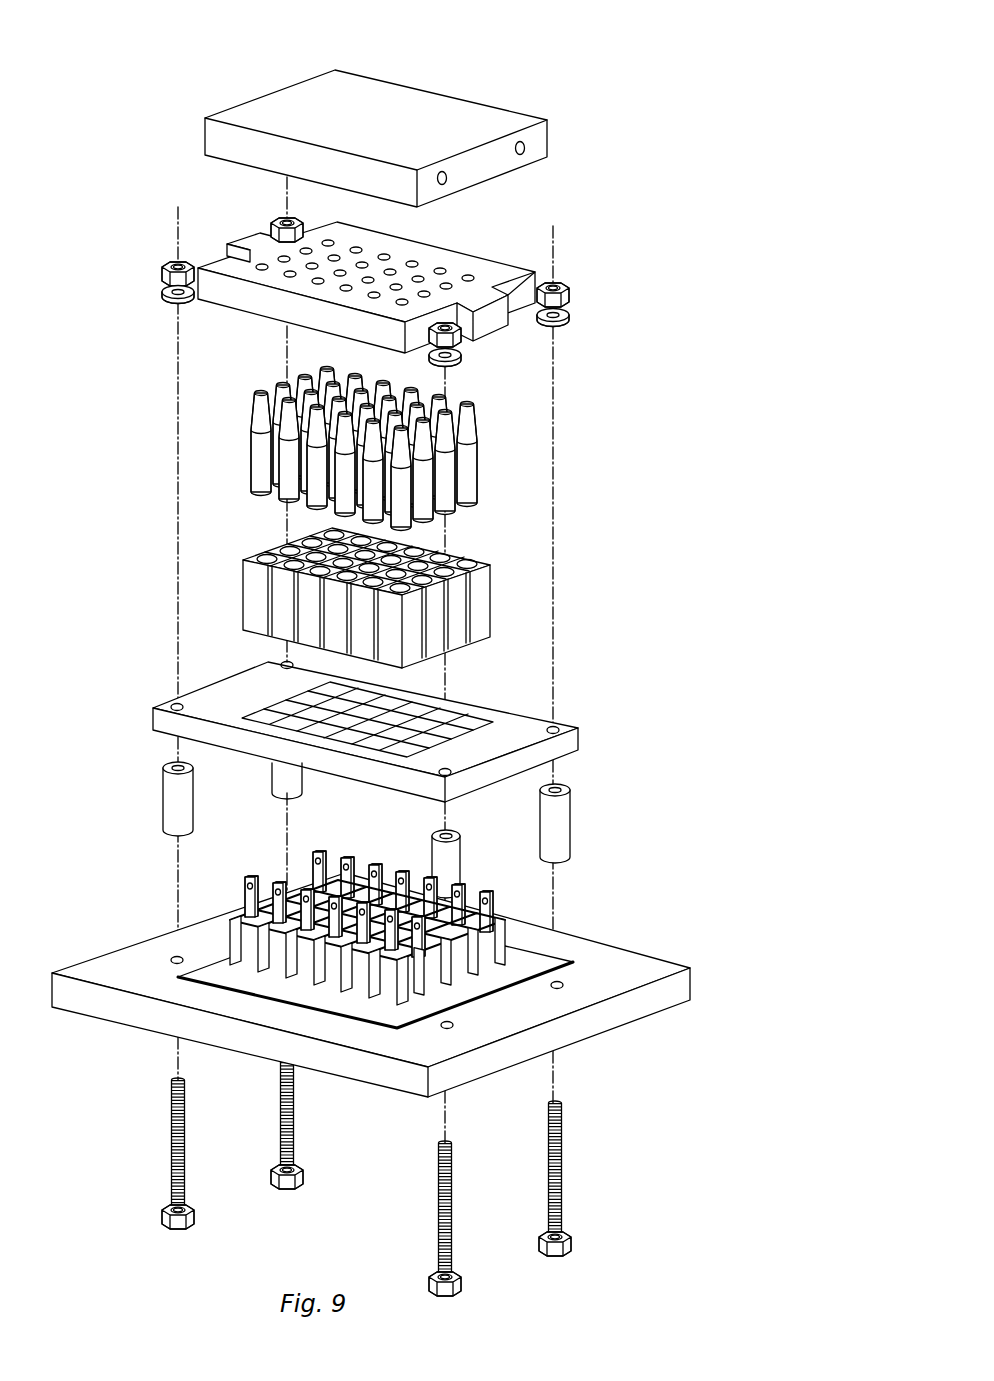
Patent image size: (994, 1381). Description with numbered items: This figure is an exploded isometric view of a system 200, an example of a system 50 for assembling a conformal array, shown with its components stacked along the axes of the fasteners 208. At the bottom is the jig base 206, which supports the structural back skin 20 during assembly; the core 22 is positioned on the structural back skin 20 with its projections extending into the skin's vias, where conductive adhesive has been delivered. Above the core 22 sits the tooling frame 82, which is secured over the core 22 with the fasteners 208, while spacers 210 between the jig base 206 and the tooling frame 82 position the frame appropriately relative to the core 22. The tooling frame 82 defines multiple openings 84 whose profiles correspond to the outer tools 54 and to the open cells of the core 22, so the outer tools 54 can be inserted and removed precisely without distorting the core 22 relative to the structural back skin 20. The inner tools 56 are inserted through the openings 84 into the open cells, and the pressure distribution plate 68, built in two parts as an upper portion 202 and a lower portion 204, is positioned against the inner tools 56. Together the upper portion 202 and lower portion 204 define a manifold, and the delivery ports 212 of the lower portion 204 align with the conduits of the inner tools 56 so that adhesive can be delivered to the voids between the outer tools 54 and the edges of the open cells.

The system 50 is at (757, 62).
The system 200 is at (600, 100).
The upper portion 202 is at (483, 105).
The lower portion 204 is at (465, 252).
The delivery ports 212 is at (441, 268).
The pressure distribution plate 68 is at (540, 218).
The fasteners 208 is at (168, 262).
The inner tools 56 is at (493, 463).
The outer tools 54 is at (502, 597).
The tooling frame 82 is at (523, 718).
The openings 84 is at (420, 700).
The spacers 210 is at (273, 783).
The jig base 206 is at (640, 960).
The structural back skin 20 is at (215, 978).
The core 22 is at (232, 935).